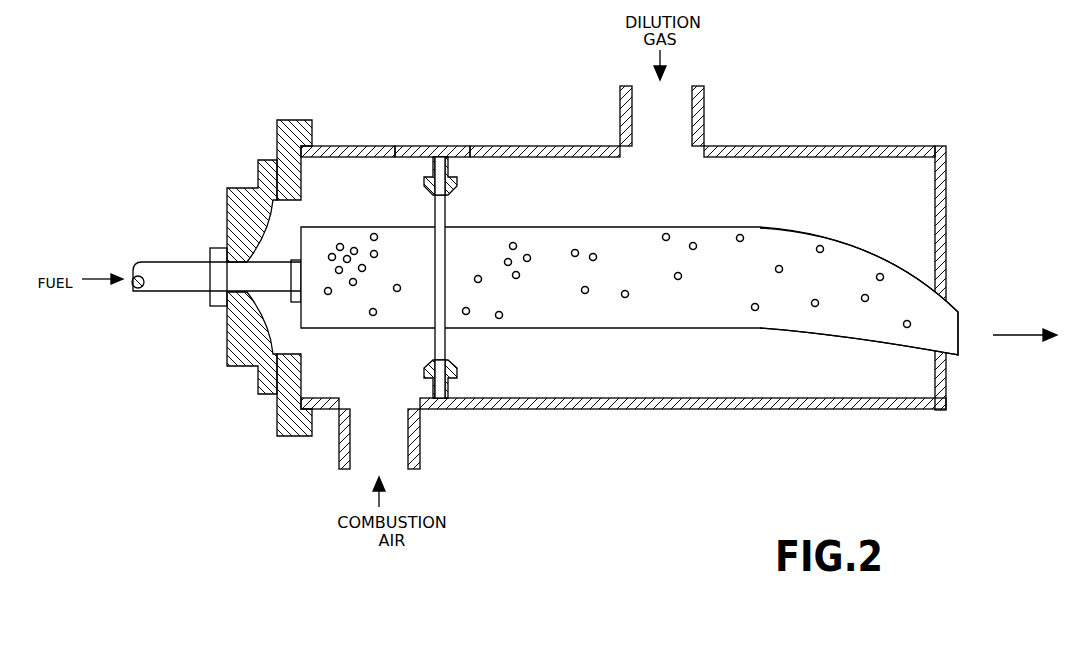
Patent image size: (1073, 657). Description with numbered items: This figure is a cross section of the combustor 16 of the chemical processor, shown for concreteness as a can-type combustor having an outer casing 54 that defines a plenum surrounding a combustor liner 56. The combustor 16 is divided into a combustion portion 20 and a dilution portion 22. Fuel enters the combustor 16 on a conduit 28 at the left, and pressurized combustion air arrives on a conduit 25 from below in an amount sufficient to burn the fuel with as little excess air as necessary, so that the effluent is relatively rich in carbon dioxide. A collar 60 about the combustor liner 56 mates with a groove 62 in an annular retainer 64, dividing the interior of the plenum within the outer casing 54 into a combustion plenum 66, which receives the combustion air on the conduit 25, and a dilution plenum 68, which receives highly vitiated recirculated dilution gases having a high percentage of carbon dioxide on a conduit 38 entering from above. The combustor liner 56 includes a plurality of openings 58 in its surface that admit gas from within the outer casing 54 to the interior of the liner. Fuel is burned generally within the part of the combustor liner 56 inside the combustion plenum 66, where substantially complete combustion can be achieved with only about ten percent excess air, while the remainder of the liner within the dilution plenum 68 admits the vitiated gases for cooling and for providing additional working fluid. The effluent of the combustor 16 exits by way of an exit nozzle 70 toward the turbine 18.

The combustor 16 is at (840, 120).
The turbine 18 is at (1017, 335).
The combustion portion 20 is at (370, 145).
The dilution portion 22 is at (638, 410).
The conduit 25 is at (420, 448).
The conduit 28 is at (167, 260).
The conduit 38 is at (705, 103).
The outer casing 54 is at (541, 145).
The combustor liner 56 is at (606, 227).
The openings 58 is at (742, 233).
The collar 60 is at (450, 212).
The groove 62 is at (424, 180).
The annular retainer 64 is at (462, 185).
The combustion plenum 66 is at (407, 165).
The dilution plenum 68 is at (593, 165).
The exit nozzle 70 is at (961, 311).